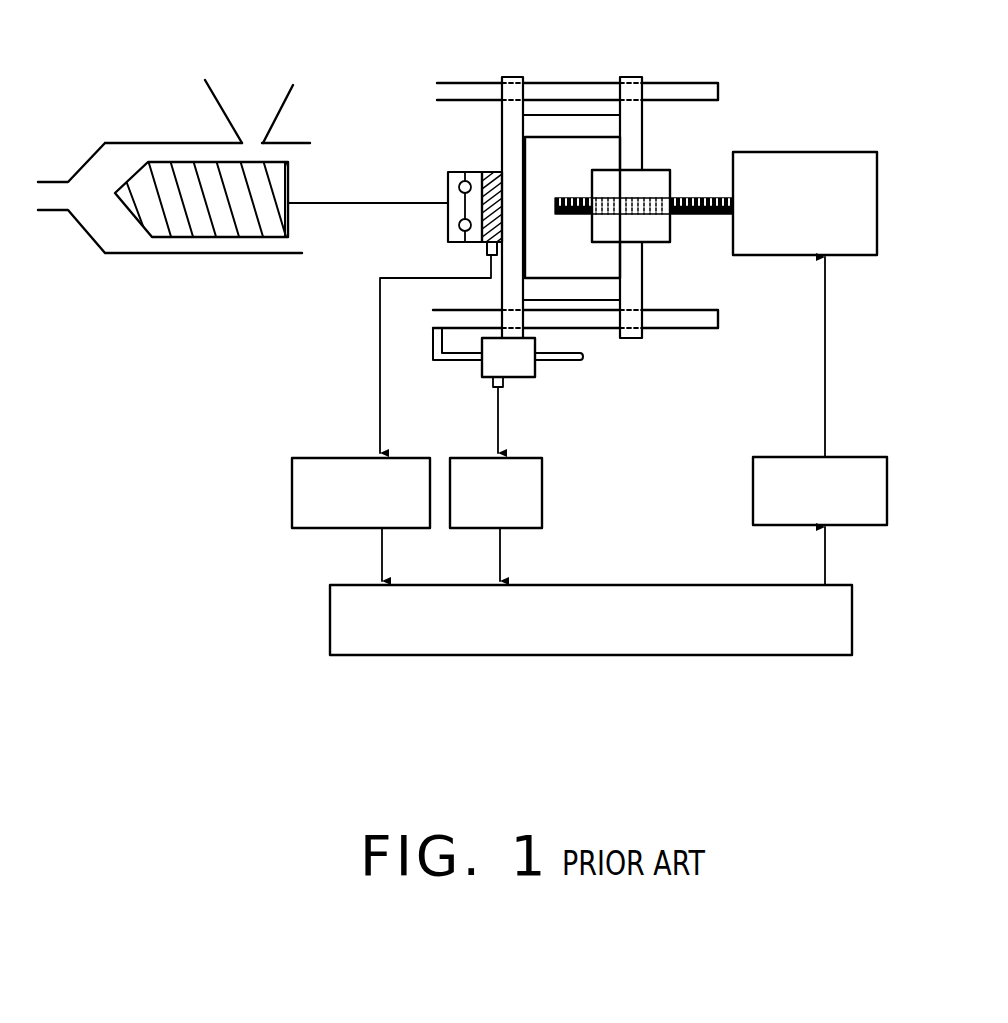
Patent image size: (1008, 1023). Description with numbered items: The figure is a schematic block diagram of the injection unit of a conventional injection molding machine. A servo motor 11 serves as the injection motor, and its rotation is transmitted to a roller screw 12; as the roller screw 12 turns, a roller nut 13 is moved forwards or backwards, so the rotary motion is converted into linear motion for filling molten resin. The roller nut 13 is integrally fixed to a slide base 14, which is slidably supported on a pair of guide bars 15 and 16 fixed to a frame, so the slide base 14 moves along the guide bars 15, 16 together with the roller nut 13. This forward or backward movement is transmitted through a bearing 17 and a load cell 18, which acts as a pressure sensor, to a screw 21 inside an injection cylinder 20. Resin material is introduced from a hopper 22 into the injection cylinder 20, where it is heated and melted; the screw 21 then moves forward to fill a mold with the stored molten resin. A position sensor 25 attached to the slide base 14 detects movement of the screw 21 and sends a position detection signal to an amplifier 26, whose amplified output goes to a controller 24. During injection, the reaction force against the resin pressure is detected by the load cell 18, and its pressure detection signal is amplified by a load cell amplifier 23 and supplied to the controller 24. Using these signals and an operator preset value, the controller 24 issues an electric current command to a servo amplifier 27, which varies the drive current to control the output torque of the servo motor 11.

The servo motor 11 is at (835, 150).
The roller screw 12 is at (710, 196).
The roller nut 13 is at (663, 168).
The slide base 14 is at (635, 268).
The guide bar 15 is at (452, 82).
The guide bar 16 is at (702, 320).
The bearing 17 is at (448, 178).
The load cell 18 is at (487, 168).
The injection cylinder 20 is at (137, 257).
The screw 21 is at (258, 228).
The hopper 22 is at (292, 87).
The load cell amplifier 23 is at (290, 493).
The controller 24 is at (328, 615).
The position sensor 25 is at (522, 378).
The amplifier 26 is at (545, 495).
The servo amplifier 27 is at (753, 492).